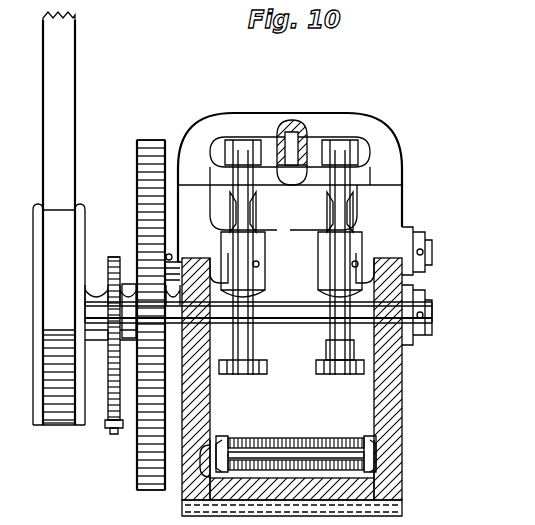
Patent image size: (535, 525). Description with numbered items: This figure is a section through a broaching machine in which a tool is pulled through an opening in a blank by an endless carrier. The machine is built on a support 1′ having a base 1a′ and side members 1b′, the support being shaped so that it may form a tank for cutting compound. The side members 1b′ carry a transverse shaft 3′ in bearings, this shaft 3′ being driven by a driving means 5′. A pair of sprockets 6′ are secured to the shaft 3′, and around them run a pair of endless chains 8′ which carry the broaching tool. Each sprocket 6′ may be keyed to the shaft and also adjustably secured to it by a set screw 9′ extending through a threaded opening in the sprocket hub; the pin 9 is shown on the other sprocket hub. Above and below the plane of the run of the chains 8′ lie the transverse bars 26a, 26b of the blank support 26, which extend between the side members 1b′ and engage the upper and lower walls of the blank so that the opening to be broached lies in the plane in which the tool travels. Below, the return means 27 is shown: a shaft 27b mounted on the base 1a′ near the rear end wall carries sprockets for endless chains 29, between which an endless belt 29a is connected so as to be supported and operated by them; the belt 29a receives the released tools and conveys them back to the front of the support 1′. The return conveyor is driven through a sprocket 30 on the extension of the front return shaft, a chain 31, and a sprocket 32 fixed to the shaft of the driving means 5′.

The support 1′ is at (301, 376).
The base 1a′ is at (380, 490).
The side members 1b′ is at (402, 372).
The transverse shaft 3′ is at (292, 262).
The driving means 5′ is at (134, 430).
The sprockets 6′ is at (246, 378).
The endless chains 8′ is at (322, 368).
The pin 9 is at (356, 262).
The set screw 9′ is at (258, 262).
The support 26 is at (305, 229).
The transverse bar 26a is at (333, 118).
The transverse bar 26b is at (312, 178).
The return means 27 is at (296, 445).
The shaft 27b is at (380, 458).
The endless chains 29 is at (295, 440).
The endless belt 29a is at (296, 444).
The sprocket 30 is at (109, 350).
The chain 31 is at (106, 428).
The sprocket 32 is at (112, 434).